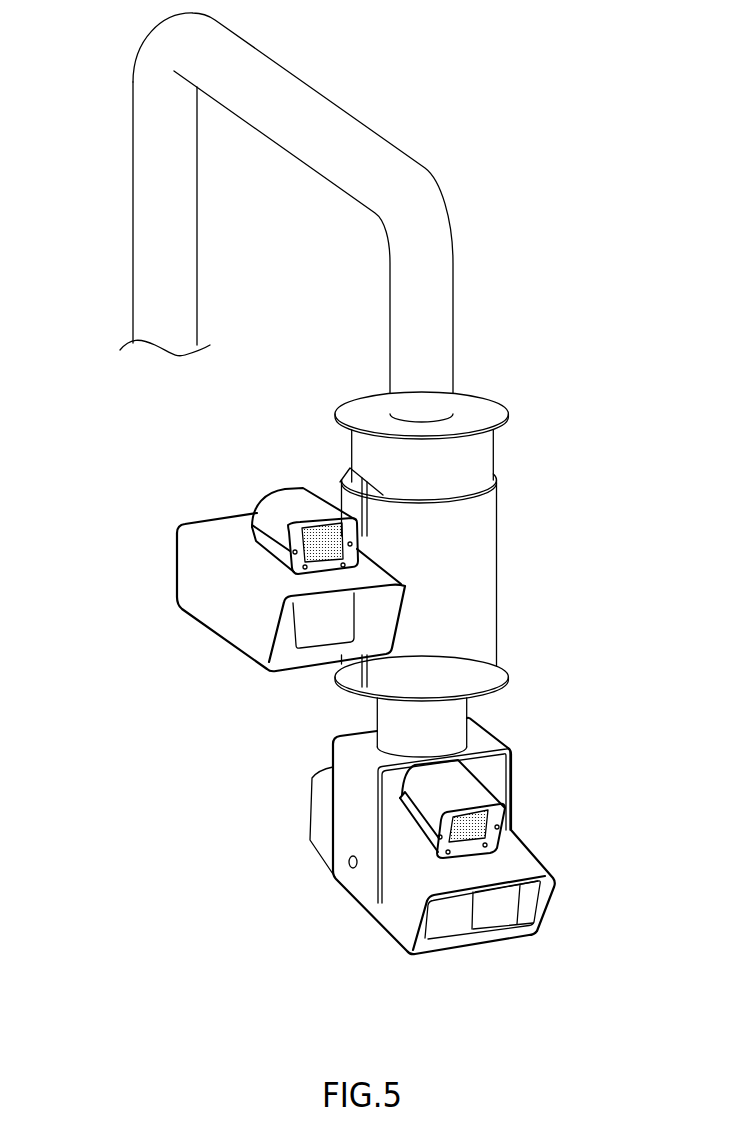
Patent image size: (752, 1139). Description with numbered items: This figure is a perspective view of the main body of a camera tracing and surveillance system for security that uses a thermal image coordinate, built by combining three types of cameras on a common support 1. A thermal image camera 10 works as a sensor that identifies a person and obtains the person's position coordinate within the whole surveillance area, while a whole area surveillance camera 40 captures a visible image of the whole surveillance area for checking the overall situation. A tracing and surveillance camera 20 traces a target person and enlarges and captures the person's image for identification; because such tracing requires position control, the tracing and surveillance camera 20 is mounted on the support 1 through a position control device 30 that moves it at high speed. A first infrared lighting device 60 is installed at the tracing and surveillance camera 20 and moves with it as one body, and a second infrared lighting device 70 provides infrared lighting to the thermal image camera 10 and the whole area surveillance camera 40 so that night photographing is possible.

The support 1 is at (141, 209).
The thermal image camera 10 is at (447, 920).
The tracing and surveillance camera 20 is at (226, 618).
The position control device 30 is at (497, 565).
The whole area surveillance camera 40 is at (497, 917).
The first infrared lighting device 60 is at (278, 499).
The second infrared lighting device 70 is at (473, 793).